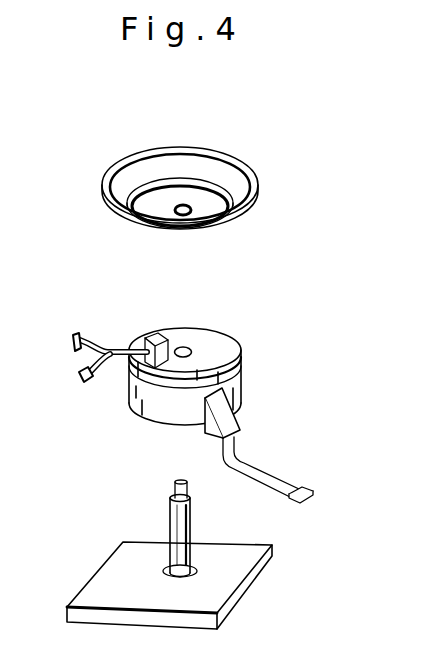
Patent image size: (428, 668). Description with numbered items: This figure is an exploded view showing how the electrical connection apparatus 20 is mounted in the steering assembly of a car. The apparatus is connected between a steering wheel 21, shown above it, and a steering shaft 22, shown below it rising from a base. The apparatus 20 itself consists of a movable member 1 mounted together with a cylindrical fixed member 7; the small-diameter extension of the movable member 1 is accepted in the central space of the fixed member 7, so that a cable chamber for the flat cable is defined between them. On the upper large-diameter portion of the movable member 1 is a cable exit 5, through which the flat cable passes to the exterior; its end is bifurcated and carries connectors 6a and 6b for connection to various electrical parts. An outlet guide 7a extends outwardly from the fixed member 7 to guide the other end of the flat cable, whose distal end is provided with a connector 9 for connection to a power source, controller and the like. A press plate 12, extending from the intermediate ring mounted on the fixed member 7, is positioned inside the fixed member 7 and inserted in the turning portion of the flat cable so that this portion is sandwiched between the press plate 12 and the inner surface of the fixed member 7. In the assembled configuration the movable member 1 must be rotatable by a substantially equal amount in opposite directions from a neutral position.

The movable member 1 is at (187, 331).
The cable exit 5 is at (158, 332).
The connector 6a is at (74, 337).
The connector 6b is at (84, 384).
The fixed member 7 is at (152, 414).
The outlet guide 7a is at (208, 438).
The connector 9 is at (310, 487).
The press plate 12 is at (237, 430).
The electrical connection apparatus 20 is at (209, 366).
The steering wheel 21 is at (258, 193).
The steering shaft 22 is at (190, 527).